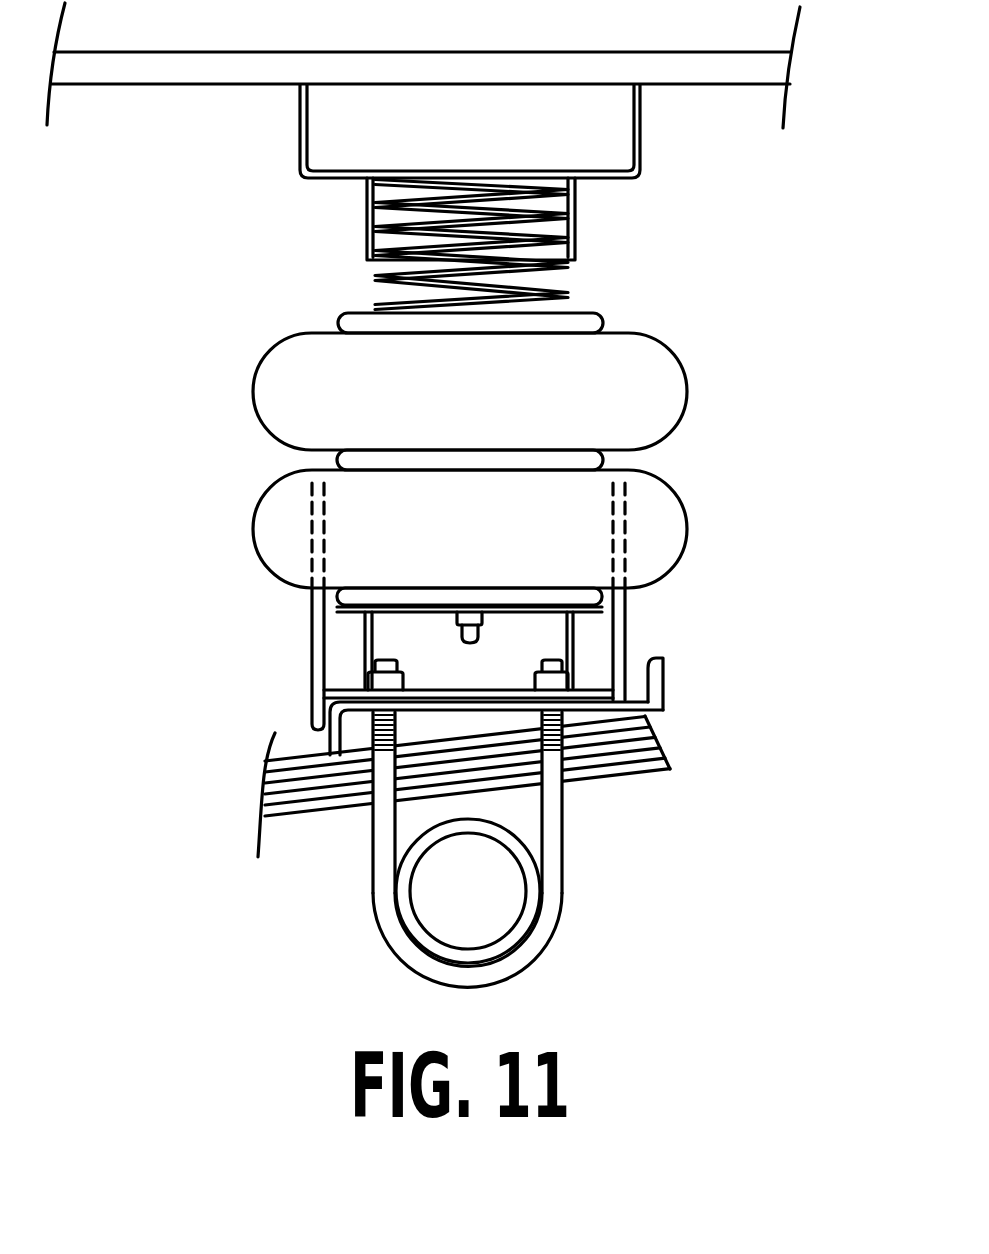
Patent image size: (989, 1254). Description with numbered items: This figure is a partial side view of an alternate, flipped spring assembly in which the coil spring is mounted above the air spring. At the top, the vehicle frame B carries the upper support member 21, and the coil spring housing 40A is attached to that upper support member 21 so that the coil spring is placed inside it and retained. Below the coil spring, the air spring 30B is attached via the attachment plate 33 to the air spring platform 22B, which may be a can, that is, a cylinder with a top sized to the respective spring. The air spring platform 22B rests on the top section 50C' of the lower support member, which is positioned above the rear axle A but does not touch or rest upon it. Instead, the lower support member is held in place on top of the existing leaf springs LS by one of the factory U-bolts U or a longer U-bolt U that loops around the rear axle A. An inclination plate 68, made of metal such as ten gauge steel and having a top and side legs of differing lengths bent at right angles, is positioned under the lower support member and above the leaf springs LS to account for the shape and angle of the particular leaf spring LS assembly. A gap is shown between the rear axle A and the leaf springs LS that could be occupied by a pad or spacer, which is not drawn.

The vehicle body frame B is at (733, 87).
The upper support member 21 is at (642, 153).
The coil spring housing 40A is at (573, 230).
The attachment plate 33 is at (598, 316).
The air spring 30B is at (345, 597).
The air spring platform 22B is at (372, 616).
The top section of lower support member 50C' is at (413, 619).
The inclination plate 68 is at (662, 662).
The leaf springs LS is at (330, 813).
The U-bolt U is at (552, 807).
The rear axle A is at (485, 914).